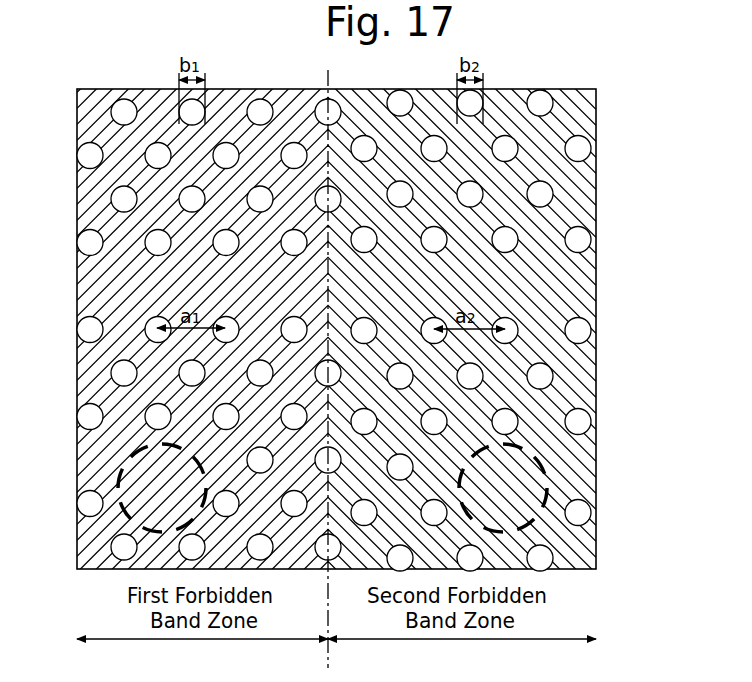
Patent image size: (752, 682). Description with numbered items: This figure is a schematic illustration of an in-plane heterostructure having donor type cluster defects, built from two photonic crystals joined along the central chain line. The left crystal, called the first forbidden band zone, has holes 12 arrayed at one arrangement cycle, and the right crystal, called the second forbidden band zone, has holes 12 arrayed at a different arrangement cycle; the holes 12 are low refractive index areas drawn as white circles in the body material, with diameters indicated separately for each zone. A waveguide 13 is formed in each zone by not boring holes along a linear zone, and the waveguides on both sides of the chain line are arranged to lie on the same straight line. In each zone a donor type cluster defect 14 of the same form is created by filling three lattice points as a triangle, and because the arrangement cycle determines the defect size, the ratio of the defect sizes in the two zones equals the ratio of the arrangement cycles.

The holes 12 is at (573, 290).
The waveguide 13 is at (585, 151).
The donor type cluster defect 14 is at (160, 490).